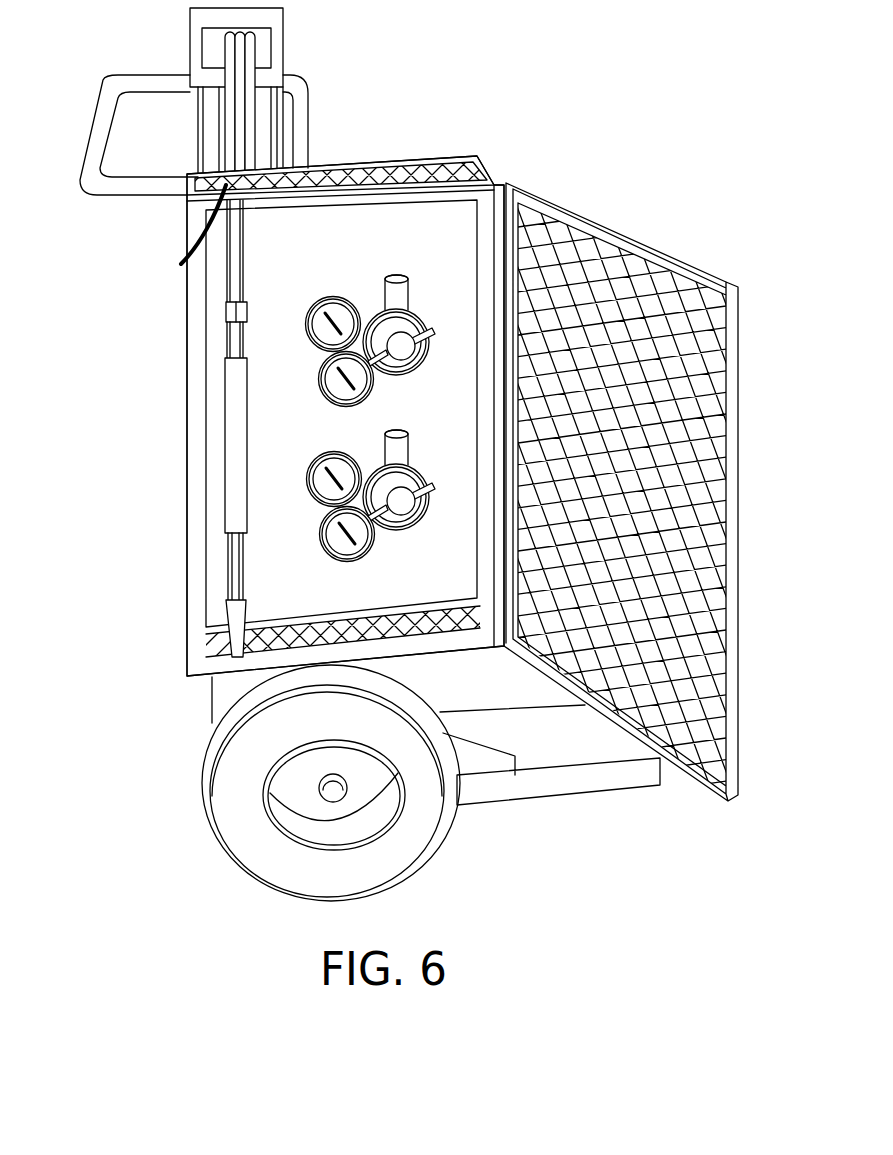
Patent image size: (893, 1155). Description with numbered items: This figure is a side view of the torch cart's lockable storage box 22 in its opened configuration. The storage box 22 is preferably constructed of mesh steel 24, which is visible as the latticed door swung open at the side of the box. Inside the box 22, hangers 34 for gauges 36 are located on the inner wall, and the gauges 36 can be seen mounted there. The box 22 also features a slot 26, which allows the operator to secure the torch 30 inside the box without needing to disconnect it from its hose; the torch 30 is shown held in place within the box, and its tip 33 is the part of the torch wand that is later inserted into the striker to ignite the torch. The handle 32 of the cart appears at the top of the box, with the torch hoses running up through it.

The storage box 22 is at (176, 485).
The mesh steel 24 is at (700, 450).
The slot 26 is at (186, 262).
The torch 30 is at (210, 386).
The handle 32 is at (197, 115).
The tip 33 is at (240, 614).
The hangers 34 is at (425, 472).
The gauges 36 is at (374, 312).